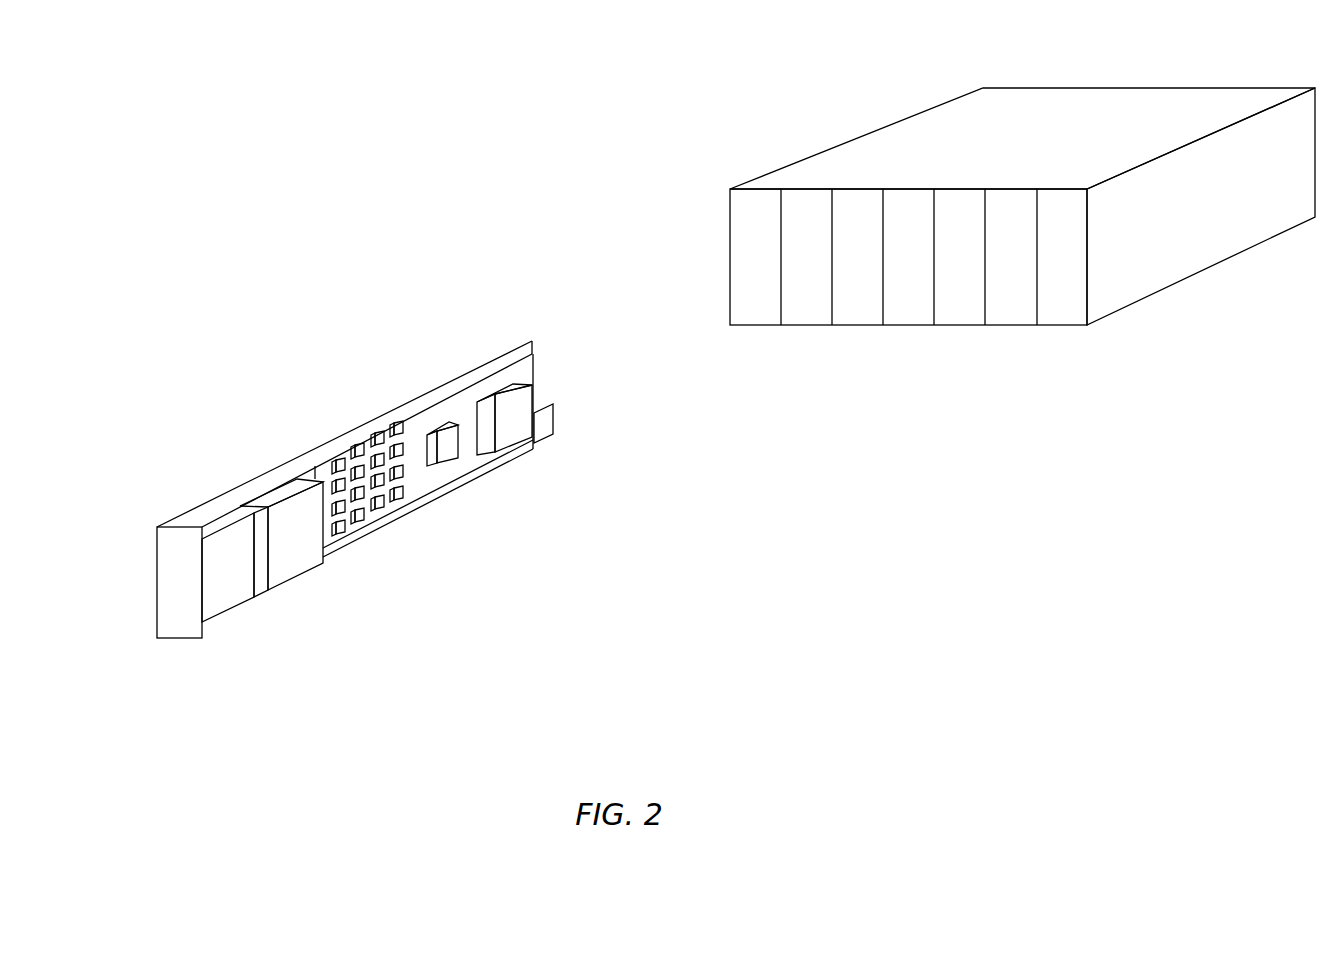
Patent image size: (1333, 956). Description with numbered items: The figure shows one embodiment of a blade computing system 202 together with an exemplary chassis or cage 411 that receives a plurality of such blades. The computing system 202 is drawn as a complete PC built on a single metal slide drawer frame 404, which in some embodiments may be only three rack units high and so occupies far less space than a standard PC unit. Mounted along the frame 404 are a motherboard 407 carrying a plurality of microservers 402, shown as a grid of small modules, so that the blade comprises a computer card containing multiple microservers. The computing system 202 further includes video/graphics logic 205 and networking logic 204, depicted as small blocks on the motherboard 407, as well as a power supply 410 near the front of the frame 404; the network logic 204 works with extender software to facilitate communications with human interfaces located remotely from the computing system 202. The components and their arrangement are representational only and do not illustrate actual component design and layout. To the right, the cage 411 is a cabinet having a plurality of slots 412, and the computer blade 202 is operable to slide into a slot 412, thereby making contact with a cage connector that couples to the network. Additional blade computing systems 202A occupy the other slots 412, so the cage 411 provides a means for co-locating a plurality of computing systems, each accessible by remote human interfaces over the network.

The computing system 202 is at (177, 648).
The metal slide drawer frame 404 is at (267, 472).
The power supply 410 is at (220, 588).
The motherboard 407 is at (420, 490).
The microservers 402 is at (368, 528).
The video/graphics logic 205 is at (438, 422).
The networking logic 204 is at (505, 395).
The cage 411 is at (757, 175).
The slot 412 is at (805, 320).
The additional blade computing systems 202A is at (968, 303).